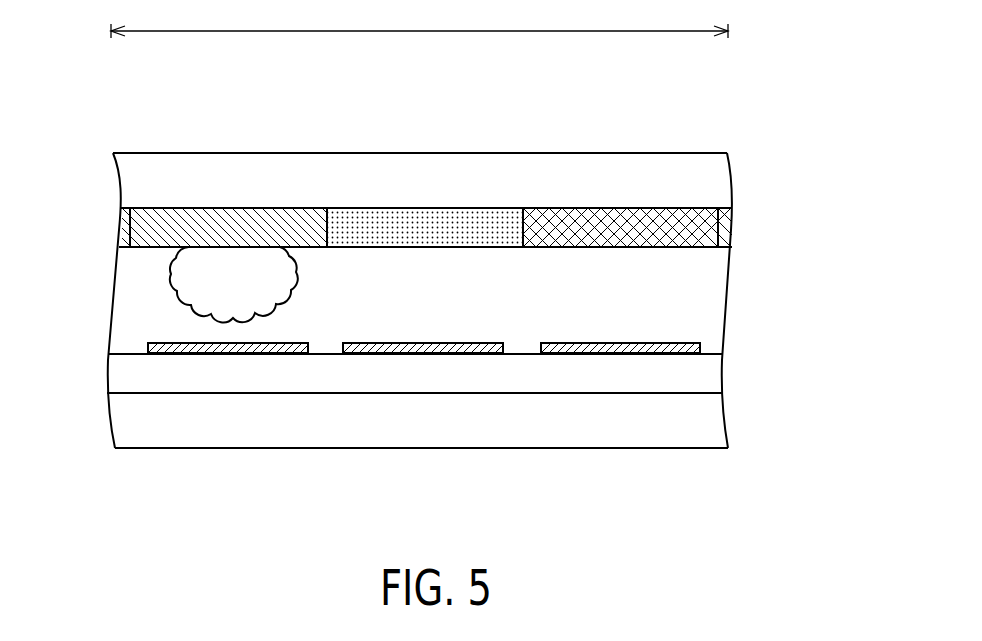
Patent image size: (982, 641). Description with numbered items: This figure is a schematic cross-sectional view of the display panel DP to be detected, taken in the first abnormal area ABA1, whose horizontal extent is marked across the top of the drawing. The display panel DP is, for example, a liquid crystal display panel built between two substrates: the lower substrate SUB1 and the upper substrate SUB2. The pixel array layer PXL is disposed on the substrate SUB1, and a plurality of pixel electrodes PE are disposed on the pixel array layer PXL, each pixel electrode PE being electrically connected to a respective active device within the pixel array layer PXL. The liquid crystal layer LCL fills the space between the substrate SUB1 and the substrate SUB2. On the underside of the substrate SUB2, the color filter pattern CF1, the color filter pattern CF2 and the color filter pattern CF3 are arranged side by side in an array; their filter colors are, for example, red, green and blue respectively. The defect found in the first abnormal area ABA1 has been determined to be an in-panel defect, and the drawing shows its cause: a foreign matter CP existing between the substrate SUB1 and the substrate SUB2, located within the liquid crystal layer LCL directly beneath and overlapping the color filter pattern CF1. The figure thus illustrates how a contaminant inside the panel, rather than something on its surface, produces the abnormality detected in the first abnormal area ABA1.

The display panel DP is at (760, 512).
The first abnormal area ABA1 is at (419, 19).
The substrate SUB2 is at (682, 182).
The color filter pattern CF1 is at (160, 230).
The color filter pattern CF2 is at (357, 230).
The color filter pattern CF3 is at (553, 230).
The liquid crystal layer LCL is at (682, 296).
The foreign matter CP is at (197, 290).
The pixel electrode PE is at (700, 345).
The pixel array layer PXL is at (682, 378).
The substrate SUB1 is at (682, 423).